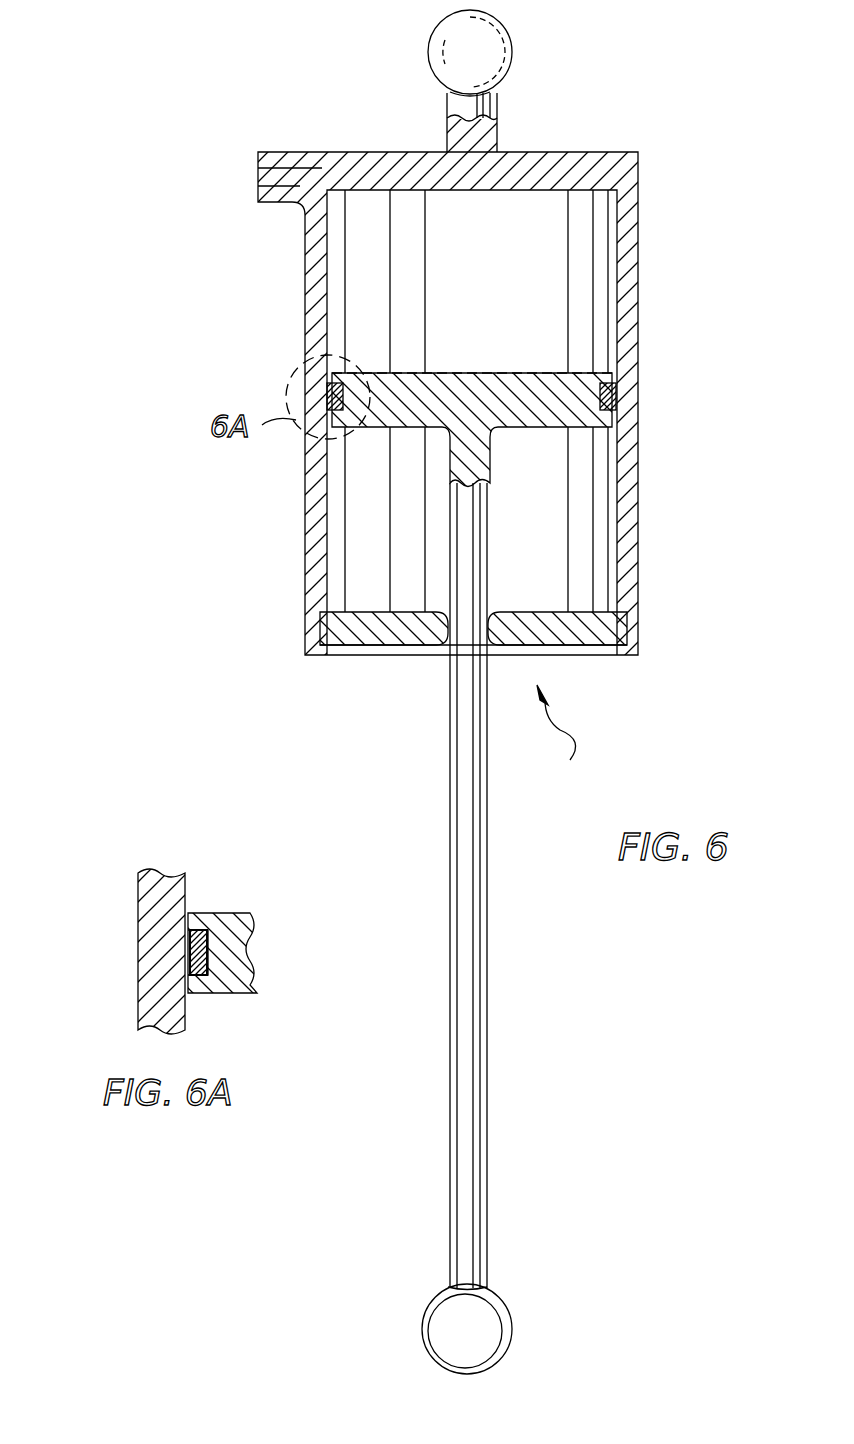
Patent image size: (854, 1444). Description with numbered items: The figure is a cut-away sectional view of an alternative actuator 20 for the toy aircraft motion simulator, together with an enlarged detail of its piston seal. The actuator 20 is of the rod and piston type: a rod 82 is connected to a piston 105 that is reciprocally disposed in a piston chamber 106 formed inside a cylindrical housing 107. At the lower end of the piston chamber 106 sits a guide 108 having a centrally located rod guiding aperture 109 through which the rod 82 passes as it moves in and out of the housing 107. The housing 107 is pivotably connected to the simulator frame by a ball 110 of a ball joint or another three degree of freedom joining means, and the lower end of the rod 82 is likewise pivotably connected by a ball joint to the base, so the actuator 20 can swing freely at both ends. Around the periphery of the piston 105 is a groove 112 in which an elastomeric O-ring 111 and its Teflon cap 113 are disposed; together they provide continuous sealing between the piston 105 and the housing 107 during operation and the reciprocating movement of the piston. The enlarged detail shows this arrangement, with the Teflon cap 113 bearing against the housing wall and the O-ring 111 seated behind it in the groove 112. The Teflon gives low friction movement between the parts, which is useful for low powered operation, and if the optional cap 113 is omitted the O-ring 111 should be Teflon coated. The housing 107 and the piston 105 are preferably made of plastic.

In FIG. 6, the actuator 20 is at (575, 738).
In FIG. 6, the rod 82 is at (487, 1015).
In FIG. 6, the piston 105 is at (478, 372).
In FIG. 6, the piston chamber 106 is at (520, 277).
In FIG. 6, the cylindrical housing 107 is at (640, 355).
In FIG. 6, the guide 108 is at (515, 614).
In FIG. 6, the rod guiding aperture 109 is at (457, 630).
In FIG. 6, the ball 110 is at (527, 52).
In FIG. 6, the elastomeric O-ring 111 is at (350, 382).
In FIG. 6A, the elastomeric O-ring 111 is at (215, 940).
In FIG. 6, the groove 112 is at (345, 430).
In FIG. 6A, the groove 112 is at (210, 965).
In FIG. 6, the Teflon cap 113 is at (330, 392).
In FIG. 6A, the Teflon cap 113 is at (188, 940).